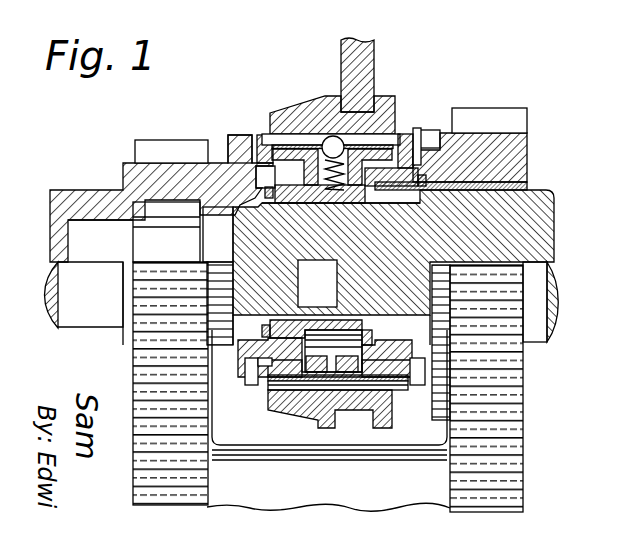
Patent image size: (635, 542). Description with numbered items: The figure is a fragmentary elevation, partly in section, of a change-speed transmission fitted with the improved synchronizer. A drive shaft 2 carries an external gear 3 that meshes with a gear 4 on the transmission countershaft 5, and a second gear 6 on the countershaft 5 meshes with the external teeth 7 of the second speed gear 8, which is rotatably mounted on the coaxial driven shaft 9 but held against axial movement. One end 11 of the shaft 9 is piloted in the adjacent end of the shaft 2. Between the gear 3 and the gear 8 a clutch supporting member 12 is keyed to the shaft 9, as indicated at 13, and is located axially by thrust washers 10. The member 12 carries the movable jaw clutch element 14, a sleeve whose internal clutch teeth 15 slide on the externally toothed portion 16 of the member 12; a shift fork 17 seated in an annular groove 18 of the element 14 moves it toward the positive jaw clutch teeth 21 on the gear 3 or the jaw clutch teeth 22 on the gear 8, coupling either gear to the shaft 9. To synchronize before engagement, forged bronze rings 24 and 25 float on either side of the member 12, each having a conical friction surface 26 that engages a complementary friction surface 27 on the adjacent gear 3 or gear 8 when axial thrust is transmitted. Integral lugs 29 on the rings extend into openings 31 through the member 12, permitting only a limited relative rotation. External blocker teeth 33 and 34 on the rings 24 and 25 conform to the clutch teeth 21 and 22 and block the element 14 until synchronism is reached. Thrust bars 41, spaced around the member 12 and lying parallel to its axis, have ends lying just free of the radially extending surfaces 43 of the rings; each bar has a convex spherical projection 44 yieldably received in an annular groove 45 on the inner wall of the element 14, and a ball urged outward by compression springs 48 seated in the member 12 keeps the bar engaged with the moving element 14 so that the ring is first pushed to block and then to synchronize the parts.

The drive shaft 2 is at (84, 190).
The external gear 3 is at (146, 147).
The gear 4 is at (147, 398).
The transmission countershaft 5 is at (401, 500).
The second gear 6 is at (514, 450).
The external teeth 7 is at (518, 118).
The second speed gear 8 is at (520, 152).
The driven shaft 9 is at (543, 208).
The thrust washers 10 is at (372, 197).
The end of driven shaft 11 is at (148, 240).
The clutch supporting member 12 is at (308, 261).
The key 13 is at (341, 226).
The movable jaw clutch element 14 is at (280, 113).
The internal clutch teeth 15 is at (405, 135).
The externally toothed portion 16 is at (368, 392).
The shift fork 17 is at (368, 55).
The annular groove 18 is at (368, 93).
The positive jaw clutch teeth 21 is at (232, 138).
The positive jaw clutch teeth 22 is at (440, 143).
The synchronizer ring 24 is at (273, 380).
The synchronizer ring 25 is at (398, 382).
The conical friction surface 26 is at (263, 198).
The friction surface 27 is at (250, 365).
The lugs 29 is at (344, 372).
The openings 31 is at (374, 331).
The blocker teeth 33 is at (263, 137).
The blocker teeth 34 is at (427, 137).
The thrust bars 41 is at (312, 138).
The radially extending surfaces 43 is at (282, 143).
The convex spherical projection 44 is at (380, 134).
The annular groove 45 is at (338, 192).
The compression springs 48 is at (333, 160).